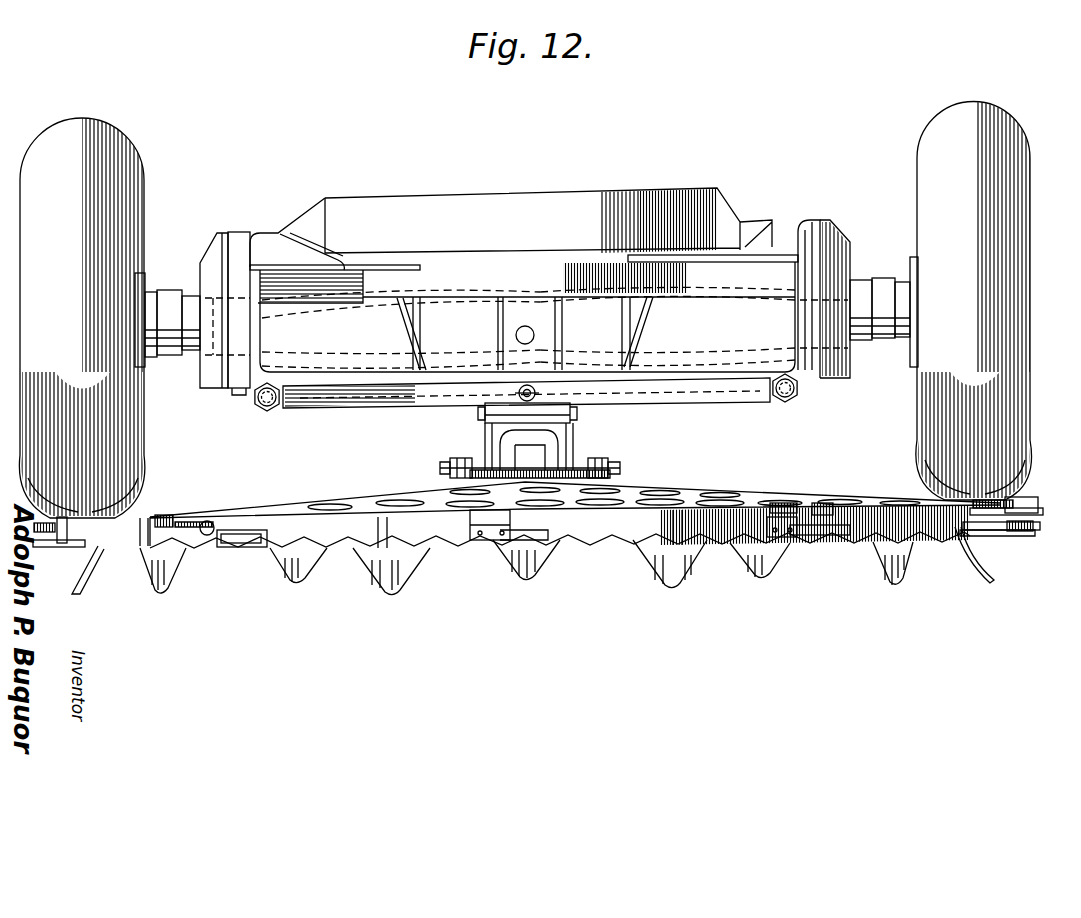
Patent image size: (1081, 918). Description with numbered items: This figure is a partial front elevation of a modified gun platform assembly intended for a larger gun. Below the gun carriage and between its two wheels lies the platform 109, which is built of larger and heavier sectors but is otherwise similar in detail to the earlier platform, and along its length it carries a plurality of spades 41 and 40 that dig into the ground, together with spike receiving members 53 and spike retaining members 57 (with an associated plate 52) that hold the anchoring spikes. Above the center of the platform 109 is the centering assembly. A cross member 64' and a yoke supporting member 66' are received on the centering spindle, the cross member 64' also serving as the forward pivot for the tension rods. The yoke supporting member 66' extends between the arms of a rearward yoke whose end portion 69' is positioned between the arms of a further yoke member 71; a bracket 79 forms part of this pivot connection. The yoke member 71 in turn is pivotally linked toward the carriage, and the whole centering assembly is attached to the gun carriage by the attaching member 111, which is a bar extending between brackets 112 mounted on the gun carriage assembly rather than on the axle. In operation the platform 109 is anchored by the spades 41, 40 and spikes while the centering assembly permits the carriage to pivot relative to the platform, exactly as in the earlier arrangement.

The brackets 112 is at (262, 411).
The attaching member 111 is at (412, 396).
The yoke member 71 is at (545, 408).
The bracket 79 is at (572, 418).
The yoke member end portion 69' is at (510, 446).
The cross member 64' is at (531, 455).
The yoke supporting member 66' is at (540, 497).
The platform 109 is at (728, 483).
The spike retaining members 57 is at (825, 505).
The spike receiving member 53 is at (1040, 528).
The plate 52 is at (1033, 533).
The shovel 40 is at (80, 592).
The spades 41 is at (170, 590).